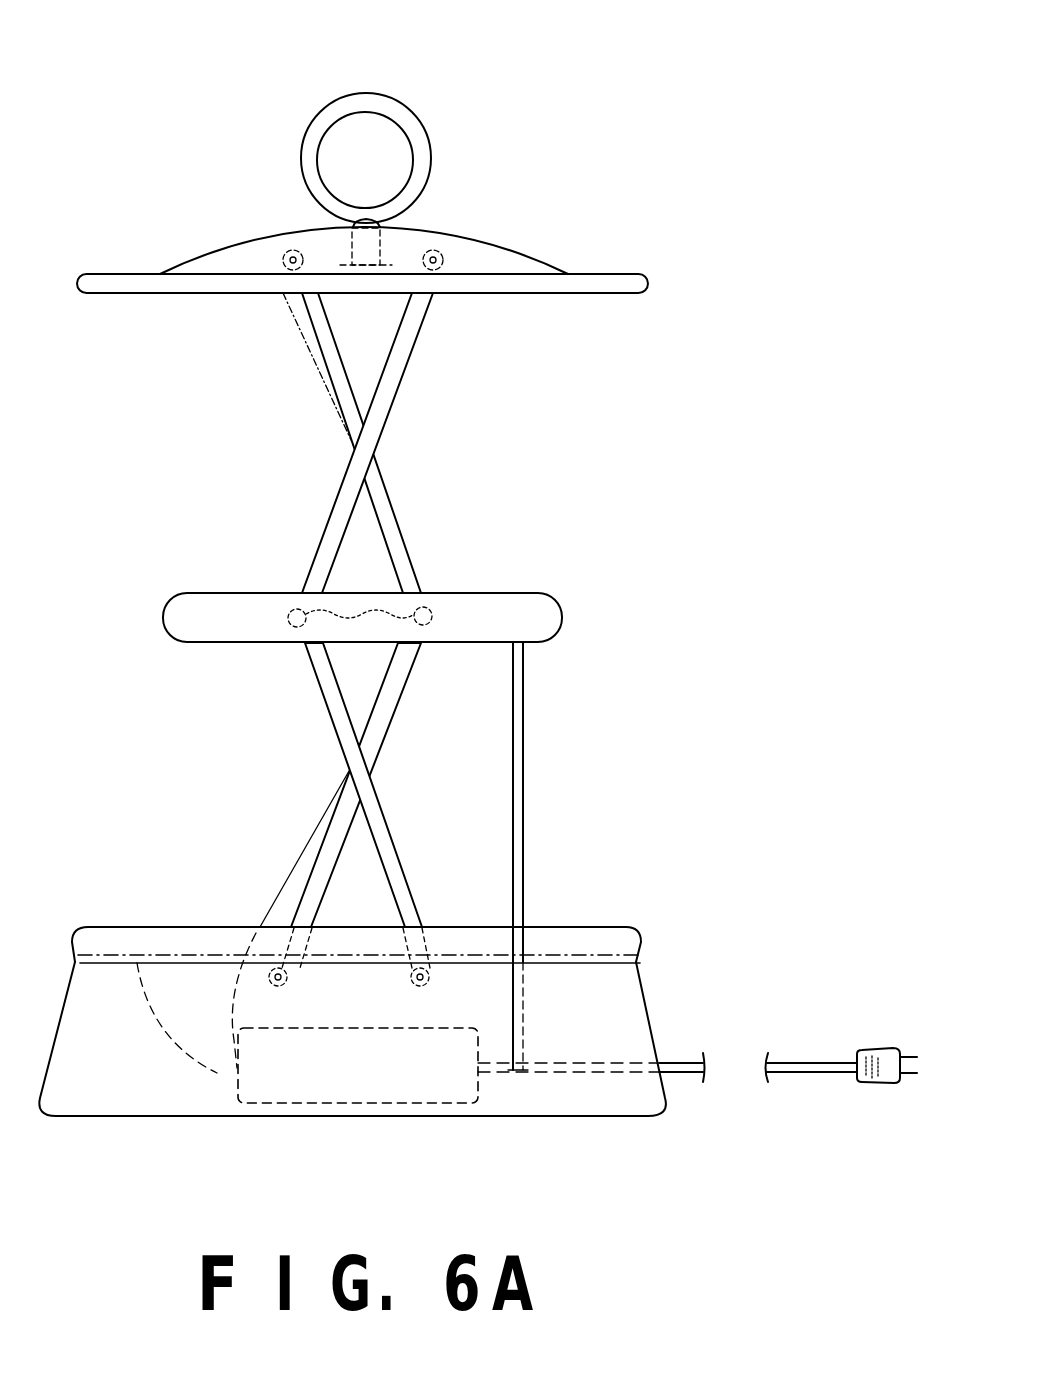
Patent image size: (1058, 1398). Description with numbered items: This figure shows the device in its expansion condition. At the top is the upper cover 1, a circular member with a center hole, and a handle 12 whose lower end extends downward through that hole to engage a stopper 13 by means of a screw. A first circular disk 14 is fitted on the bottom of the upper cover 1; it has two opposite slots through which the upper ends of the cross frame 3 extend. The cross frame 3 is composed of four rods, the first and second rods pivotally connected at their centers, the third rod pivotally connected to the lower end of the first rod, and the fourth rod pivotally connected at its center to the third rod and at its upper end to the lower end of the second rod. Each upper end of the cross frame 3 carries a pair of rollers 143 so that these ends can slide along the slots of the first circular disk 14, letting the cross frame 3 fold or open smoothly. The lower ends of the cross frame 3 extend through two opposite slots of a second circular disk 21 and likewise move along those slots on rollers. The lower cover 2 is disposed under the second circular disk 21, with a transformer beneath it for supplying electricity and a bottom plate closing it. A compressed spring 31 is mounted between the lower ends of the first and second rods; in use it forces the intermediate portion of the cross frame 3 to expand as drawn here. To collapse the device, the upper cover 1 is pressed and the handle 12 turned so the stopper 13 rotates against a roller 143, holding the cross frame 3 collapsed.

The upper cover 1 is at (508, 262).
The handle 12 is at (373, 101).
The stopper 13 is at (341, 265).
The first circular disk 14 is at (600, 286).
The rollers 143 is at (285, 256).
The lower cover 2 is at (550, 1098).
The second circular disk 21 is at (573, 957).
The cross frame 3 is at (386, 503).
The compressed spring 31 is at (368, 608).